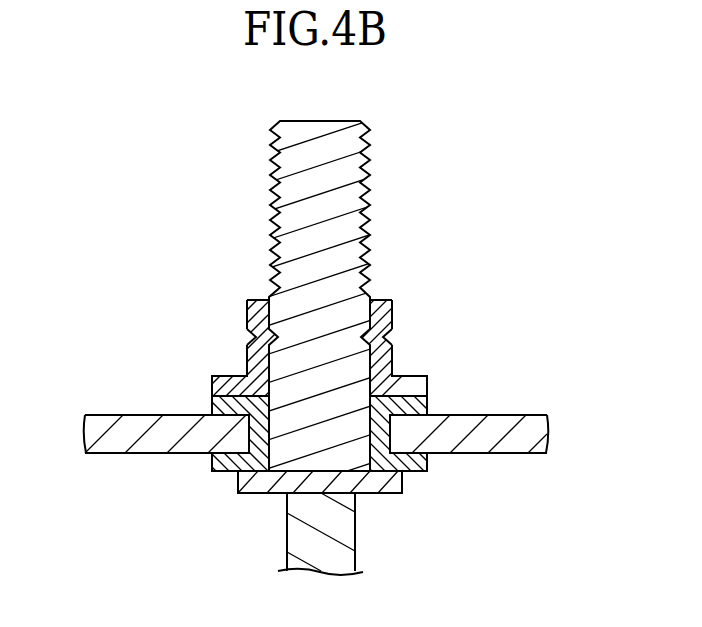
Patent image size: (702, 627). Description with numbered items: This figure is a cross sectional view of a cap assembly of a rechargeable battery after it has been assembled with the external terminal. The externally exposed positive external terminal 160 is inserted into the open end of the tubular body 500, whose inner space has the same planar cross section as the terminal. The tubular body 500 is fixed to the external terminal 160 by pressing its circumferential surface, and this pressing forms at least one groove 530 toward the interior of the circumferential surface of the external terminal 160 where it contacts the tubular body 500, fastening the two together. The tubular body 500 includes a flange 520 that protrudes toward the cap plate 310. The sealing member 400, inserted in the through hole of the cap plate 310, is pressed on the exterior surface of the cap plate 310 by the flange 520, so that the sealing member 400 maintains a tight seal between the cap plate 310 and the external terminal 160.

The positive external terminal 160 is at (288, 243).
The tubular body 500 is at (229, 357).
The groove 530 is at (393, 334).
The flange 520 is at (417, 377).
The sealing member 400 is at (415, 406).
The cap plate 310 is at (479, 445).